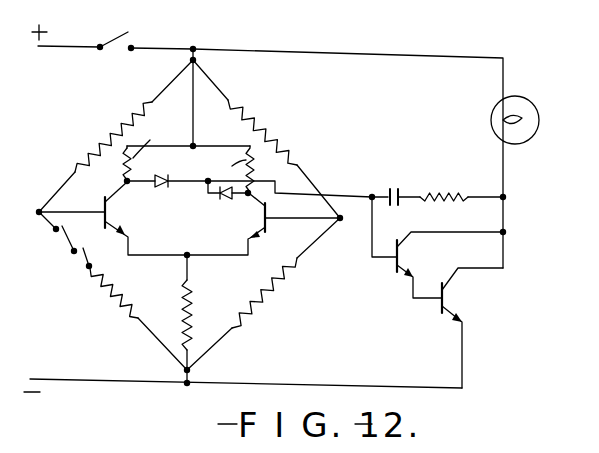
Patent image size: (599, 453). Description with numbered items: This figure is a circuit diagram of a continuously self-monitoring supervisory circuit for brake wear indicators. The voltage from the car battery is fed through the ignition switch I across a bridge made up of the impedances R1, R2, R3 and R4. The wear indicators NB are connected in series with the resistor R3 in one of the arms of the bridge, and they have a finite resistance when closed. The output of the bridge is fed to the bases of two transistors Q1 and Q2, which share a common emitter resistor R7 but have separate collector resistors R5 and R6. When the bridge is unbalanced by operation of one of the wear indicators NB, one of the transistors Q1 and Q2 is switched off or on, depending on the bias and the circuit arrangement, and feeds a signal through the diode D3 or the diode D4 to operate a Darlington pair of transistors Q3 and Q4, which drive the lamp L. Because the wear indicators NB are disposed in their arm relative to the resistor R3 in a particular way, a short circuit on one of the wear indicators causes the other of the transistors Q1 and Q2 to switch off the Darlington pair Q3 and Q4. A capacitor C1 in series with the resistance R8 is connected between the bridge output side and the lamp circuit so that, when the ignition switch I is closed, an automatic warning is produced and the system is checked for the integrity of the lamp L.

The ignition switch I is at (114, 27).
The impedance R1 is at (116, 136).
The impedance R2 is at (266, 139).
The resistor R3 is at (138, 319).
The impedance R4 is at (263, 294).
The collector resistor R5 is at (145, 147).
The collector resistor R6 is at (228, 169).
The common emitter resistor R7 is at (202, 319).
The resistance R8 is at (461, 181).
The diode D3 is at (249, 174).
The diode D4 is at (228, 201).
The transistor Q1 is at (113, 218).
The transistor Q2 is at (263, 224).
The transistor Q3 is at (437, 247).
The transistor Q4 is at (472, 328).
The capacitor C1 is at (396, 183).
The lamp L is at (523, 120).
The wear indicators NB is at (64, 246).